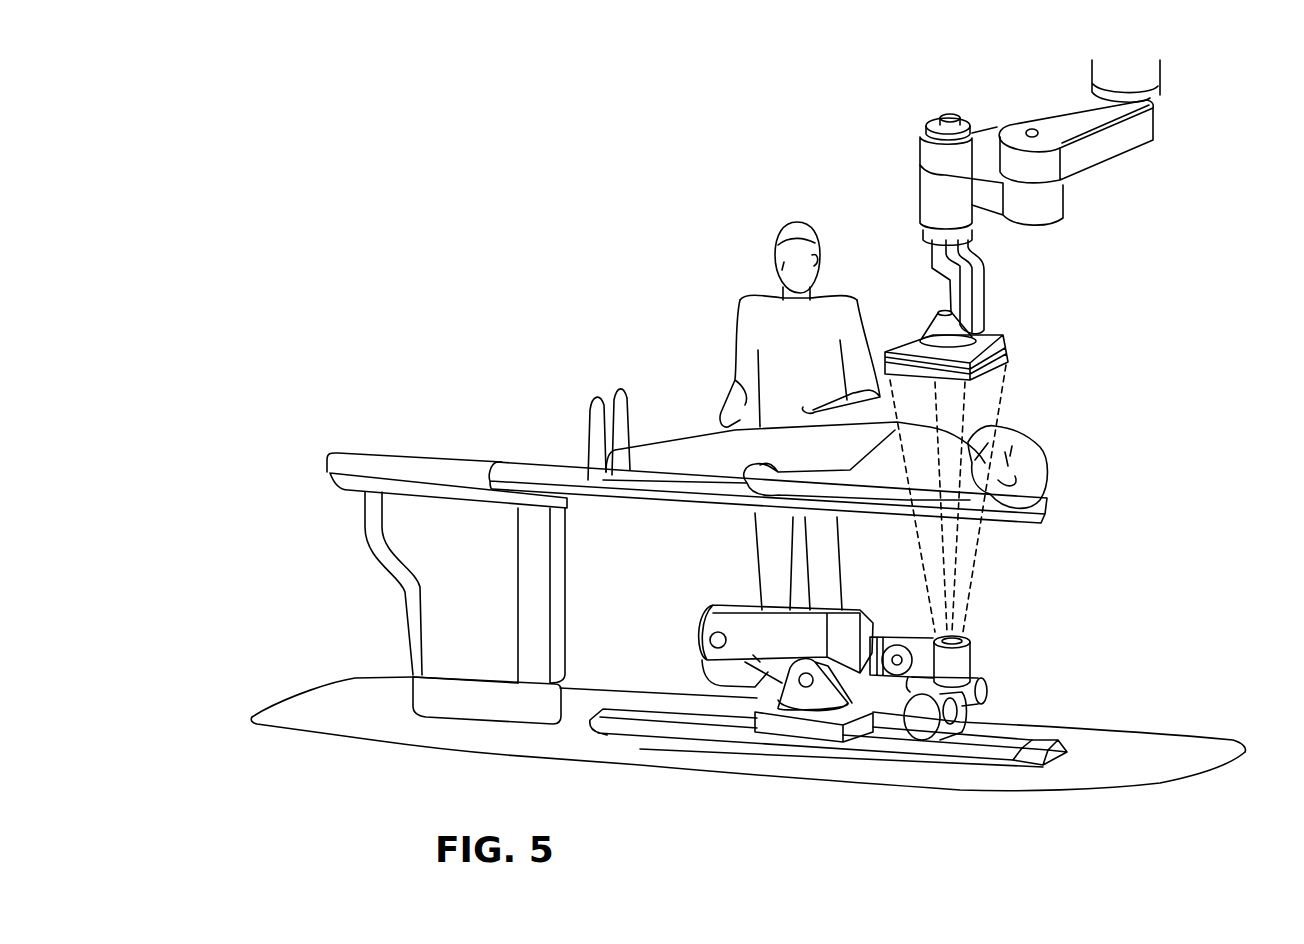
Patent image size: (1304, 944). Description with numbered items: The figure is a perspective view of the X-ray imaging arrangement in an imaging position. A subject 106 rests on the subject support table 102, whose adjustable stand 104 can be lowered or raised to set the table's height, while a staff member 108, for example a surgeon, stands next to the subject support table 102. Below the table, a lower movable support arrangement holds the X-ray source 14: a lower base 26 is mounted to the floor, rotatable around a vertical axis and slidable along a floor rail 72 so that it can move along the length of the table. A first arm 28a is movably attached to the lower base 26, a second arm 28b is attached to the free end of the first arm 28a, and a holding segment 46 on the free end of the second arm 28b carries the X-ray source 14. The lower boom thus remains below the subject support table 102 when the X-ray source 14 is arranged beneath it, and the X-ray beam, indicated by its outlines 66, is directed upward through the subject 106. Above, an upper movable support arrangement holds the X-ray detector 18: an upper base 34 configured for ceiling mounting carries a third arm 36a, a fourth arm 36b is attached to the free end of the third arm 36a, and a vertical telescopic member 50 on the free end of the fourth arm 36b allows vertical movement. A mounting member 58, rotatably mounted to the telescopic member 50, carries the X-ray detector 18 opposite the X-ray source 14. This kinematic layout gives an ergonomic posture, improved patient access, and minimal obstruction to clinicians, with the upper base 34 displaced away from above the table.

The X-ray source 14 is at (993, 692).
The X-ray detector 18 is at (1002, 337).
The lower base 26 is at (790, 700).
The first arm 28a is at (742, 665).
The second arm 28b is at (745, 623).
The upper base 34 is at (1160, 72).
The third arm 36a is at (1093, 150).
The fourth arm 36b is at (987, 143).
The holding segment 46 is at (937, 637).
The vertical telescopic member 50 is at (878, 191).
The mounting member 58 is at (938, 313).
The outlines of X-ray beam 66 is at (1002, 396).
The floor rail 72 is at (1033, 723).
The subject support table 102 is at (558, 470).
The adjustable stand 104 is at (567, 551).
The subject 106 is at (1007, 443).
The staff member 108 is at (757, 302).